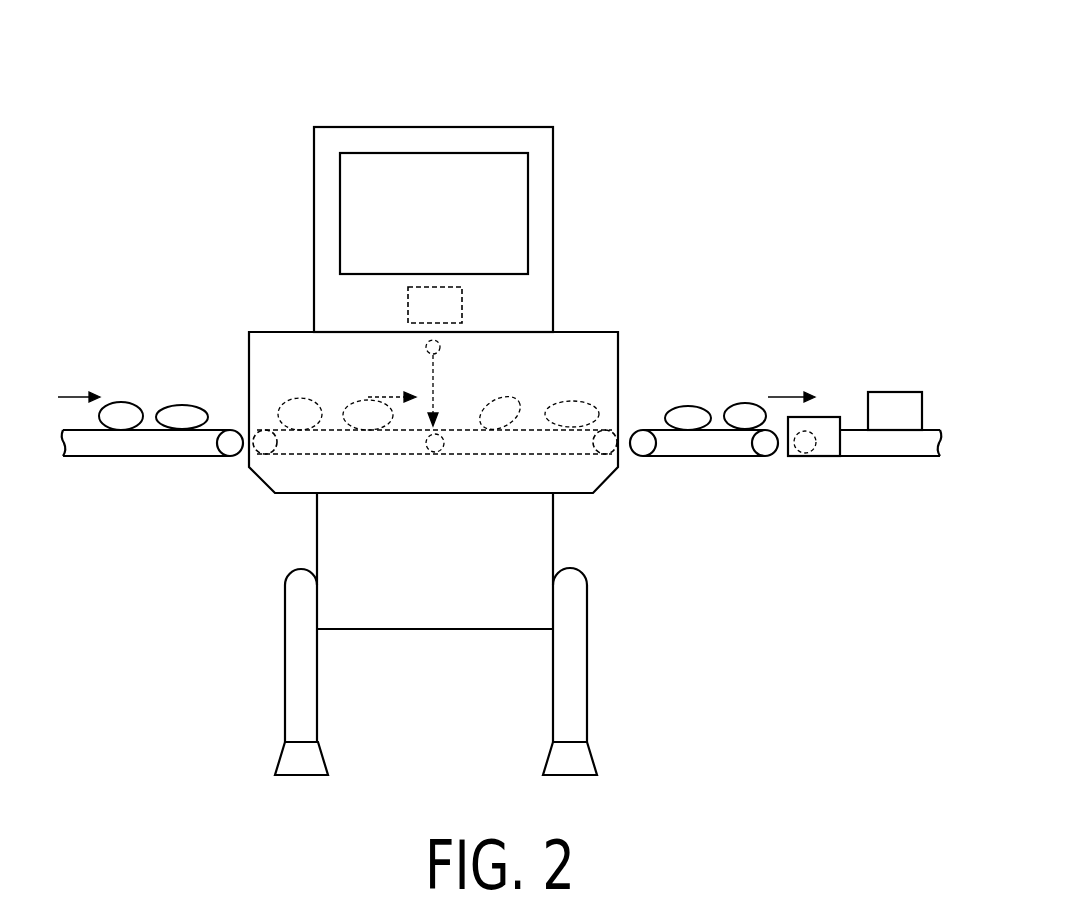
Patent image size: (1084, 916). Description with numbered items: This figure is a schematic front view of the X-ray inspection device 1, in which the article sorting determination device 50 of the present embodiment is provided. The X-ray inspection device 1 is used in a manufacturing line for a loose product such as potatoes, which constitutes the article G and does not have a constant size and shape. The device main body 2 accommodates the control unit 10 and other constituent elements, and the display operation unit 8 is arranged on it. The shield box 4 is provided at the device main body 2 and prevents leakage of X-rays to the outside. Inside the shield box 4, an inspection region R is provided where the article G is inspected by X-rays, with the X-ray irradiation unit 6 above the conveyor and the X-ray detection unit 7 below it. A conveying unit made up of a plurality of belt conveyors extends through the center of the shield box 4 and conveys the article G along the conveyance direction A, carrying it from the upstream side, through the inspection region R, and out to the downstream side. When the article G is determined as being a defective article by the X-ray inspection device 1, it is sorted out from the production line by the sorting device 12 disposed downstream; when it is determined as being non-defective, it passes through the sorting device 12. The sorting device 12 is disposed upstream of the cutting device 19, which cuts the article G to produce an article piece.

The X-ray inspection device 1 is at (640, 94).
The article sorting determination device 50 is at (499, 402).
The device main body 2 is at (314, 183).
The shield box 4 is at (619, 337).
The X-ray irradiation unit 6 is at (441, 345).
The X-ray detection unit 7 is at (445, 445).
The display operation unit 8 is at (528, 233).
The control unit 10 is at (408, 308).
The sorting device 12 is at (822, 417).
The cutting device 19 is at (900, 392).
The article G is at (190, 404).
The conveyance direction A is at (372, 397).
The inspection region R is at (481, 390).